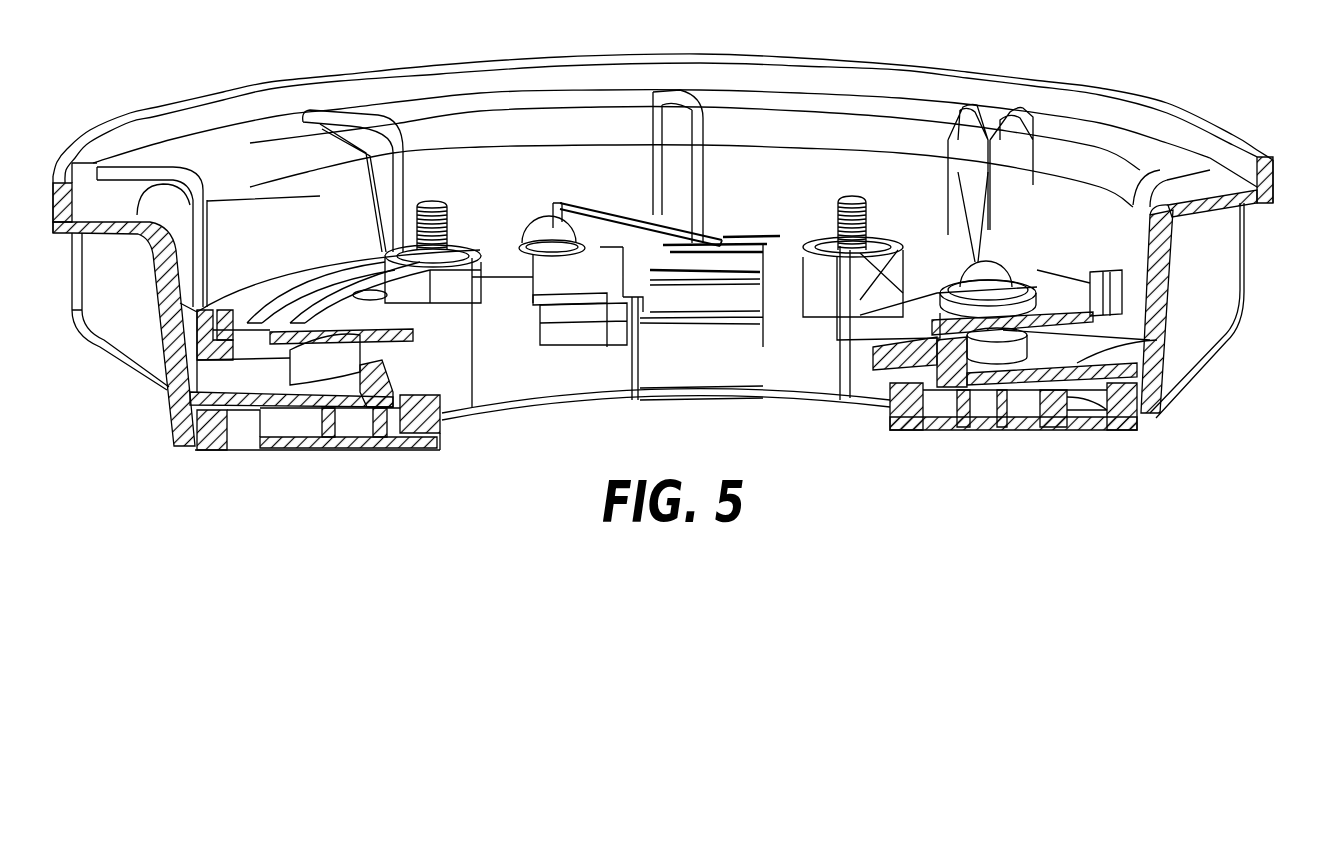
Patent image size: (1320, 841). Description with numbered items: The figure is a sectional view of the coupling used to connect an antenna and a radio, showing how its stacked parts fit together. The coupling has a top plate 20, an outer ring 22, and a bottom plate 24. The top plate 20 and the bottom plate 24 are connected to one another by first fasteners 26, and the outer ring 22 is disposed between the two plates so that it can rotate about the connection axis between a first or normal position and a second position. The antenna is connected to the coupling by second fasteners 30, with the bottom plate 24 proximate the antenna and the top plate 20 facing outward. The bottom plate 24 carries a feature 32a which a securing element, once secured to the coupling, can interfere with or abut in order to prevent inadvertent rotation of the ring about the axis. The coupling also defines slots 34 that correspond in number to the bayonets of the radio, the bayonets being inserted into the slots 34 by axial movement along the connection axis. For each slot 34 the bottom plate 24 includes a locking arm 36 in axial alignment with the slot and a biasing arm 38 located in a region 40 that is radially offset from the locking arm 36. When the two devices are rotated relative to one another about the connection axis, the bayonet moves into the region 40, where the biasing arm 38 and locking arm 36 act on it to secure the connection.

The top plate 20 is at (1030, 430).
The outer ring 22 is at (1243, 273).
The bottom plate 24 is at (1140, 345).
The first fasteners 26 is at (527, 225).
The second fasteners 30 is at (432, 200).
The feature 32a is at (558, 210).
The slots 34 is at (690, 357).
The locking arm 36 is at (710, 293).
The biasing arm 38 is at (580, 317).
The region 40 is at (558, 290).